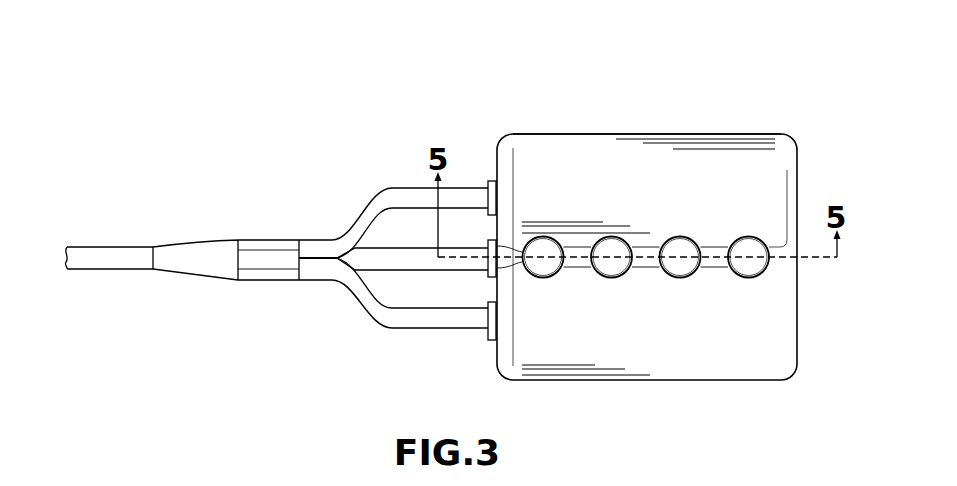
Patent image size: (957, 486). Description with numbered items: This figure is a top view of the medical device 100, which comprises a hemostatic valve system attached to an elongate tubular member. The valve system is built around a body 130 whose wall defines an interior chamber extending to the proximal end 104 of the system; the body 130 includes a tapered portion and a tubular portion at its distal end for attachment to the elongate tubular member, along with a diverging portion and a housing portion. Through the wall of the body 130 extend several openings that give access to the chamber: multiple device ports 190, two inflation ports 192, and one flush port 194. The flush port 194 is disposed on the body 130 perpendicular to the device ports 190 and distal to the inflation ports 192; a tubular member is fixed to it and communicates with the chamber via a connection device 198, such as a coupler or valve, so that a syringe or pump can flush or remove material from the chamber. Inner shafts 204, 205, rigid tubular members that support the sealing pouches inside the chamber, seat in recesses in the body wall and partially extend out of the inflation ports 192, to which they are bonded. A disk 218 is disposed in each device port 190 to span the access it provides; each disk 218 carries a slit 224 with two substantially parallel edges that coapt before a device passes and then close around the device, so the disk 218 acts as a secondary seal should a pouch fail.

The medical device 100 is at (658, 220).
The proximal end 104 is at (587, 142).
The body 130 is at (533, 134).
The device ports 190 is at (646, 301).
The inflation ports 192 is at (490, 181).
The flush port 194 is at (490, 282).
The connection device 198 is at (490, 240).
The inner shaft 204 is at (488, 337).
The inner shaft 205 is at (488, 185).
The disk 218 is at (748, 239).
The slit 224 is at (677, 240).